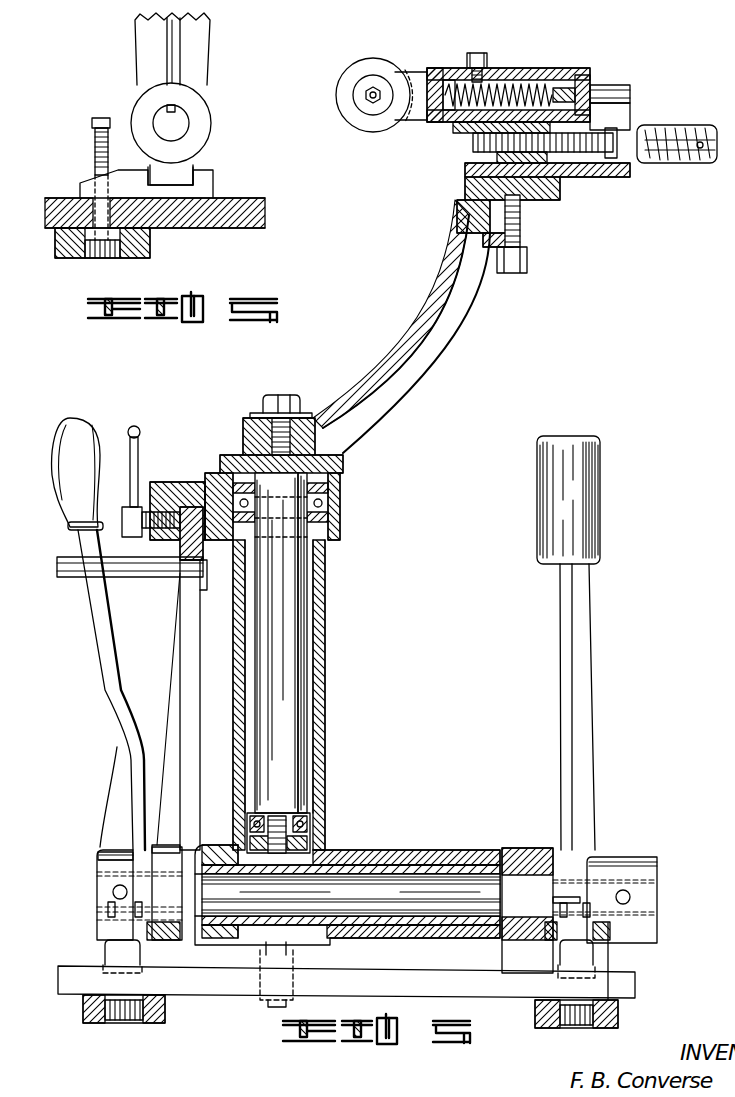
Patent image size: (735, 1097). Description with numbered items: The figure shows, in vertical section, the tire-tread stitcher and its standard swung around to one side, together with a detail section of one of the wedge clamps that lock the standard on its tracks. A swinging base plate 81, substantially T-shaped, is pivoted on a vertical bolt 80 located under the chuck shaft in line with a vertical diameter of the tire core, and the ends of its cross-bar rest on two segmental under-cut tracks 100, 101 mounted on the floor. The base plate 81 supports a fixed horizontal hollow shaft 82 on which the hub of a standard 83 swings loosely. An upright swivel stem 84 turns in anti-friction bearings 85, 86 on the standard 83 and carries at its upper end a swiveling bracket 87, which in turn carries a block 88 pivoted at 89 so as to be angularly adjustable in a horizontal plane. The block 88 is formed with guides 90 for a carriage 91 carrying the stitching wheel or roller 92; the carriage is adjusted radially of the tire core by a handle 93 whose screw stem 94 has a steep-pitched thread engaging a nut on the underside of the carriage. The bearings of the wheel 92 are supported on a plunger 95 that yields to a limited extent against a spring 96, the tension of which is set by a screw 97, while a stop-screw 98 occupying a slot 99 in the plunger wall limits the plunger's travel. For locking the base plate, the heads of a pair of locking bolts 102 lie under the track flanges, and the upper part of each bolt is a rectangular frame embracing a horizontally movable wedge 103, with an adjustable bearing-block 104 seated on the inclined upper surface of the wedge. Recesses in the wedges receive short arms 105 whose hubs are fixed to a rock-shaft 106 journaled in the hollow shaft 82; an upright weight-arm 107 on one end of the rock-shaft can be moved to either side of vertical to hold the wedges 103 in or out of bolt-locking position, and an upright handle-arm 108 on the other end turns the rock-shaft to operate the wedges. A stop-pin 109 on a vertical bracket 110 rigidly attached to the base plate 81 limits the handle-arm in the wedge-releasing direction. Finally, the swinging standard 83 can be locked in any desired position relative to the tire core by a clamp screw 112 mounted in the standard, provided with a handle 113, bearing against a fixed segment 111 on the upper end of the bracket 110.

In FIG. 5, the vertical bolt 80 is at (268, 1002).
In FIG. 6, the swinging base plate 81 is at (240, 200).
In FIG. 5, the swinging base plate 81 is at (473, 983).
In FIG. 5, the hollow shaft 82 is at (480, 846).
In FIG. 5, the standard 83 is at (325, 707).
In FIG. 5, the upright swivel stem 84 is at (290, 622).
In FIG. 5, the anti-friction bearing 85 is at (340, 510).
In FIG. 5, the anti-friction bearing 86 is at (310, 827).
In FIG. 5, the swiveling bracket 87 is at (440, 335).
In FIG. 5, the block 88 is at (599, 176).
In FIG. 5, the pivot 89 is at (525, 208).
In FIG. 5, the guides 90 is at (615, 118).
In FIG. 5, the carriage 91 is at (565, 74).
In FIG. 5, the stitching wheel 92 is at (385, 124).
In FIG. 5, the handle 93 is at (672, 160).
In FIG. 5, the screw stem 94 is at (473, 136).
In FIG. 5, the plunger 95 is at (446, 73).
In FIG. 5, the spring 96 is at (492, 83).
In FIG. 5, the screw 97 is at (620, 90).
In FIG. 5, the stop-screw 98 is at (482, 56).
In FIG. 5, the slot 99 is at (470, 66).
In FIG. 5, the segmental under-cut track 100 is at (620, 1010).
In FIG. 6, the segmental under-cut track 101 is at (150, 230).
In FIG. 5, the segmental under-cut track 101 is at (83, 1004).
In FIG. 6, the locking bolt 102 is at (105, 248).
In FIG. 5, the locking bolt 102 is at (123, 1020).
In FIG. 6, the wedge 103 is at (203, 180).
In FIG. 5, the wedge 103 is at (120, 958).
In FIG. 6, the adjustable bearing-block 104 is at (95, 170).
In FIG. 6, the short arm 105 is at (173, 175).
In FIG. 5, the short arm 105 is at (98, 937).
In FIG. 5, the rock-shaft 106 is at (423, 897).
In FIG. 5, the weight-arm 107 is at (577, 600).
In FIG. 5, the handle-arm 108 is at (86, 450).
In FIG. 5, the stop-pin 109 is at (72, 574).
In FIG. 5, the vertical bracket 110 is at (187, 708).
In FIG. 5, the fixed segment 111 is at (195, 508).
In FIG. 5, the clamp screw 112 is at (160, 510).
In FIG. 5, the handle 113 is at (138, 452).